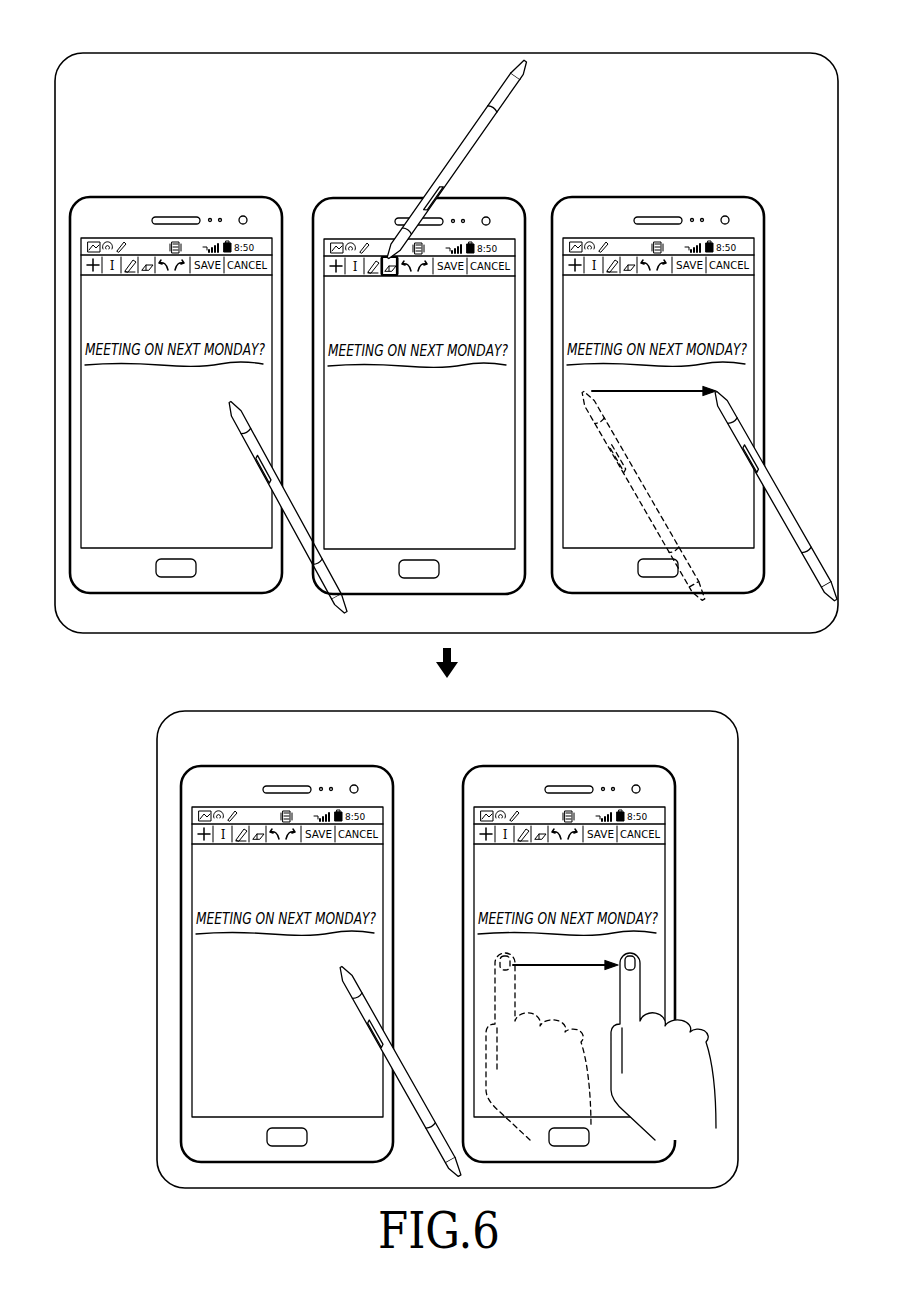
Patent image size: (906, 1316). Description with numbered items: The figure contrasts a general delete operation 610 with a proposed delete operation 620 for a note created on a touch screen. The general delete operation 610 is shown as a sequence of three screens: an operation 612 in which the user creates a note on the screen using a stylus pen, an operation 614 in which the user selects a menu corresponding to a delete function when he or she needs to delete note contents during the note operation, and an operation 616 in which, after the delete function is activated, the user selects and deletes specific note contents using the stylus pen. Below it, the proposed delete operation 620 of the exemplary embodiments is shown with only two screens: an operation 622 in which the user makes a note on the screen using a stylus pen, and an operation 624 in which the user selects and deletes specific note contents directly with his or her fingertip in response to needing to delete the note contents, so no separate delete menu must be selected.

The general delete operation 610 is at (445, 53).
The operation in which the user creates a note 612 is at (176, 197).
The operation in which the user selects a delete menu 614 is at (379, 198).
The operation in which the user selects and deletes note contents using the stylus p 616 is at (656, 197).
The proposed delete operation 620 is at (515, 710).
The operation in which the user makes a note 622 is at (285, 766).
The operation in which the user selects and deletes note contents using a fingertip 624 is at (566, 766).